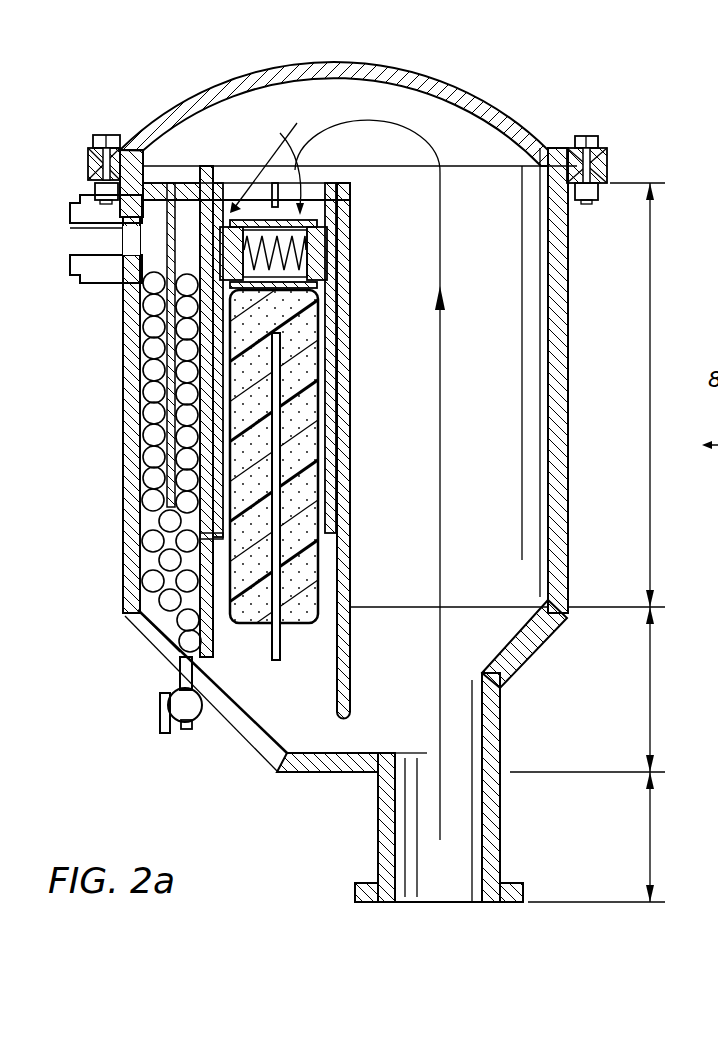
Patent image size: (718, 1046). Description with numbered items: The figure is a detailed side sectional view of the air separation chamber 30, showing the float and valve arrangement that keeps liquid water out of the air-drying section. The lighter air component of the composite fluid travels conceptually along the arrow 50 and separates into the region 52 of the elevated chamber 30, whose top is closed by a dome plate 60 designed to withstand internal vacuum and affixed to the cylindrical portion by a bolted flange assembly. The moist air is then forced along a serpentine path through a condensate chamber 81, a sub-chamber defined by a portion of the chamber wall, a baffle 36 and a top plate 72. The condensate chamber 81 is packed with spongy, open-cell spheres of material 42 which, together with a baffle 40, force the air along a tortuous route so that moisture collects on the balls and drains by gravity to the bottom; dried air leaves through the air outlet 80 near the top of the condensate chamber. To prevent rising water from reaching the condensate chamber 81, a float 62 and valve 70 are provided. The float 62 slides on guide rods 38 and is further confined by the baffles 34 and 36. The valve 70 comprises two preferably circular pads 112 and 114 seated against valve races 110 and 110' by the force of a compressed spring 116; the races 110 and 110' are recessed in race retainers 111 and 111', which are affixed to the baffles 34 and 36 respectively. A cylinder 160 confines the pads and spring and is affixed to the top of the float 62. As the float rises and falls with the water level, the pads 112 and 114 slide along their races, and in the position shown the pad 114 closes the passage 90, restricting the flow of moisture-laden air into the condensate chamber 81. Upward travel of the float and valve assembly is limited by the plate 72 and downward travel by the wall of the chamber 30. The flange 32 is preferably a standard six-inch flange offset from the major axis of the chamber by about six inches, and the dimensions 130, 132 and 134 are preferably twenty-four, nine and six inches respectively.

The air separation chamber 30 is at (676, 264).
The flange 32 is at (355, 890).
The baffle 34 is at (350, 570).
The baffle 36 is at (183, 617).
The guide rod 38 is at (270, 648).
The baffle 40 is at (150, 537).
The material 42 is at (125, 490).
The arrow 50 is at (441, 343).
The region 52 is at (507, 490).
The dome plate 60 is at (204, 84).
The float 62 is at (308, 443).
The valve 70 is at (335, 161).
The top plate 72 is at (163, 205).
The air outlet 80 is at (95, 213).
The condensate chamber 81 is at (140, 612).
The passage 90 is at (203, 245).
The valve race 110 is at (310, 442).
The valve race 110' is at (136, 361).
The race retainer 111 is at (371, 358).
The race retainer 111' is at (100, 450).
The valve pad 112 is at (326, 262).
The valve pad 114 is at (140, 318).
The compressed spring 116 is at (298, 253).
The cylinder 160 is at (314, 222).
The dimension 130 is at (651, 350).
The dimension 132 is at (651, 690).
The dimension 134 is at (651, 840).